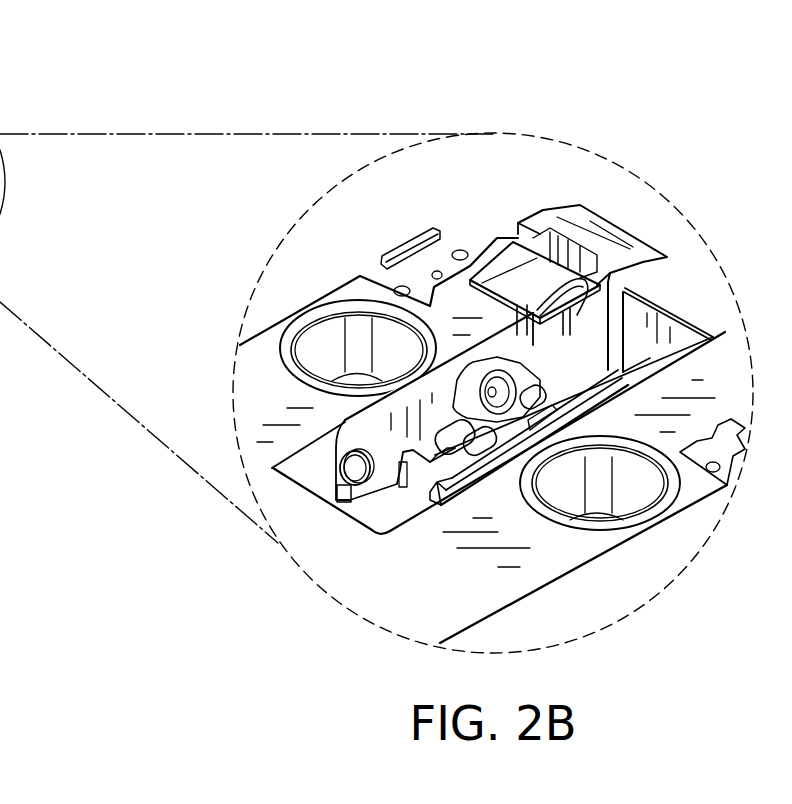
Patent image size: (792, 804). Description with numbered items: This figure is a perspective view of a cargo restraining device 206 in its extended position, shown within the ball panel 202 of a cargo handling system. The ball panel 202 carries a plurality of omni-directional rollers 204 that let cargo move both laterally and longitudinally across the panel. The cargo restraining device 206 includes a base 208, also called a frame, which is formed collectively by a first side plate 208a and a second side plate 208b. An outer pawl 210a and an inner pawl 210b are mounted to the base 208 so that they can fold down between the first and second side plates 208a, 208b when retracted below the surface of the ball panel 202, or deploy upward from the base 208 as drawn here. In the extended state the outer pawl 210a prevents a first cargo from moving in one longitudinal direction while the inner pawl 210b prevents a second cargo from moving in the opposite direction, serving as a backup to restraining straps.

The ball panel 202 is at (367, 587).
The omni-directional roller 204 is at (636, 513).
The cargo restraining device 206 is at (655, 190).
The base 208 is at (326, 503).
The first side plate 208a is at (387, 400).
The second side plate 208b is at (713, 340).
The outer pawl 210a is at (568, 215).
The inner pawl 210b is at (513, 287).